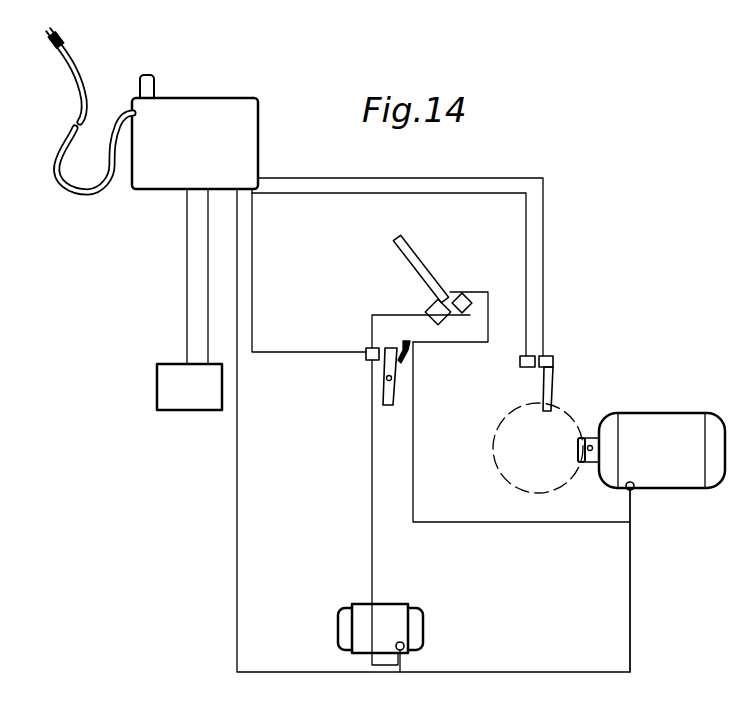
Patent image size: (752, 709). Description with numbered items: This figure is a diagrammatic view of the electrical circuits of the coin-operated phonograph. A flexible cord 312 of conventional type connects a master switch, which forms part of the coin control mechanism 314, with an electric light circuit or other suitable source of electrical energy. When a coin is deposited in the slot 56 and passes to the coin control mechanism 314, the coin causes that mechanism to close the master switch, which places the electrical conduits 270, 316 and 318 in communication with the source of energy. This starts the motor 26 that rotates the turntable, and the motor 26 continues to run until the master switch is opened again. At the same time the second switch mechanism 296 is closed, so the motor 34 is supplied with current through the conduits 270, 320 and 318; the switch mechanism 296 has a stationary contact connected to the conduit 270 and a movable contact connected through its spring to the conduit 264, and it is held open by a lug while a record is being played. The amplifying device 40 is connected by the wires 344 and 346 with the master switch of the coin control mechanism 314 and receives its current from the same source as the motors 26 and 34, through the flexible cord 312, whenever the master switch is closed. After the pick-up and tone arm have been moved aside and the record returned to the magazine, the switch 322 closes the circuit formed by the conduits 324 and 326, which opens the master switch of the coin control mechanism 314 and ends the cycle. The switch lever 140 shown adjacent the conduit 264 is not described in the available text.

The flexible cord 312 is at (72, 52).
The slot 56 is at (157, 79).
The coin control mechanism 314 is at (233, 110).
The electrical conduit 324 is at (397, 178).
The electrical conduit 326 is at (468, 193).
The conduit 270 is at (253, 254).
The wire 344 is at (187, 263).
The wire 346 is at (208, 298).
The amplifying device 40 is at (157, 386).
The switch lever 140 is at (412, 248).
The conduit 264 is at (492, 270).
The switch mechanism 296 is at (367, 357).
The switch 322 is at (548, 357).
The motor 34 is at (687, 422).
The conduit 320 is at (413, 462).
The electrical conduit 316 is at (372, 490).
The motor 26 is at (400, 622).
The electrical conduit 318 is at (631, 571).